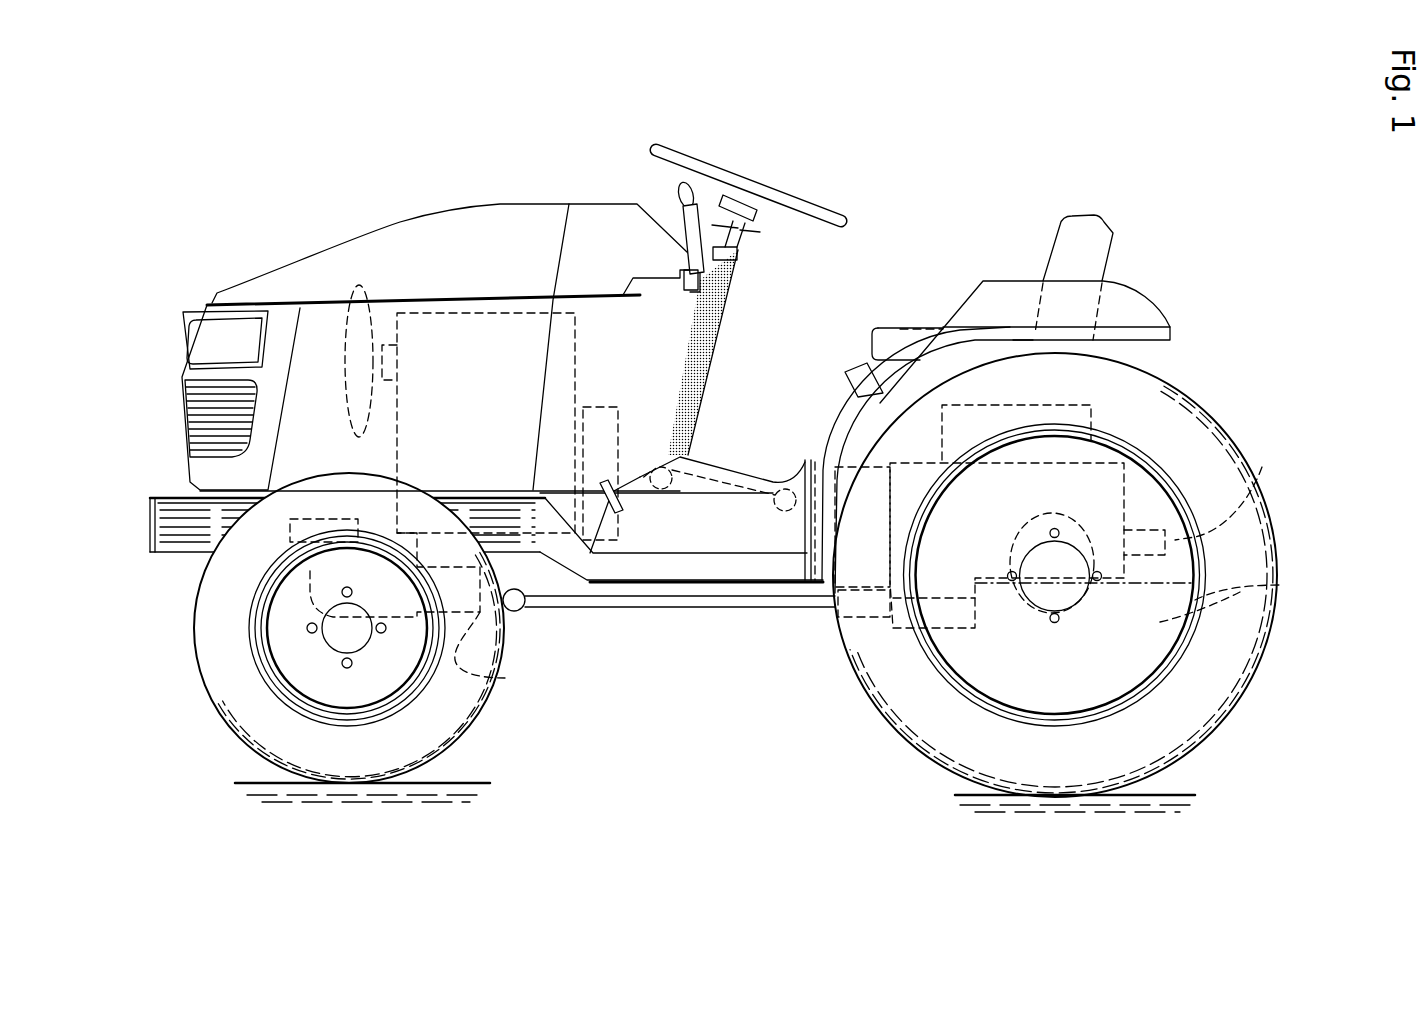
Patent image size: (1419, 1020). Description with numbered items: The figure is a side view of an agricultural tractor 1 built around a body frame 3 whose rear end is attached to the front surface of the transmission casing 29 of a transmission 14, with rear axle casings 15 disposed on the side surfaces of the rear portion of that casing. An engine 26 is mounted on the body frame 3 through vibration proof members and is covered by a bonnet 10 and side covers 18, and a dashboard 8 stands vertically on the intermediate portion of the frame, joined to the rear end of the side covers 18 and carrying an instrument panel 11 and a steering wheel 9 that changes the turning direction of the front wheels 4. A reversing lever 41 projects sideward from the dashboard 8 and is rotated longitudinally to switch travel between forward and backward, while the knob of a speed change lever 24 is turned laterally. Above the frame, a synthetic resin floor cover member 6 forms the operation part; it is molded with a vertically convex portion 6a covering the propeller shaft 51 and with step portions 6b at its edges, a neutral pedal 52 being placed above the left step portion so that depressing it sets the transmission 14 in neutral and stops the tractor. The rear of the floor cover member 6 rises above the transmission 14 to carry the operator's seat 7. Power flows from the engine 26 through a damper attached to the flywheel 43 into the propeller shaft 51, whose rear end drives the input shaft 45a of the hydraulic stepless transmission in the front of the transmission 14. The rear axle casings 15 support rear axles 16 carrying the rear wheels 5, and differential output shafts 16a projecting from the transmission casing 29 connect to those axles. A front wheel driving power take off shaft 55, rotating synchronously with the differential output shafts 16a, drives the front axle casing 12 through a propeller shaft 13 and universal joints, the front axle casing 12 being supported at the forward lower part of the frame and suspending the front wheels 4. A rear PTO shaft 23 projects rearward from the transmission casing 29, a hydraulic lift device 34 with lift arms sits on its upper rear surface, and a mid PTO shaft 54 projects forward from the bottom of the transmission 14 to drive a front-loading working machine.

The agricultural tractor 1 is at (565, 160).
The body frame 3 is at (165, 553).
The front wheels 4 is at (238, 742).
The rear wheels 5 is at (1220, 745).
The floor cover member 6 is at (745, 592).
The vertically convex portion 6a is at (725, 462).
The step portions 6b is at (688, 548).
The operator's seat 7 is at (1082, 216).
The dashboard 8 is at (742, 310).
The steering wheel 9 is at (755, 176).
The bonnet 10 is at (510, 213).
The instrument panel 11 is at (650, 207).
The front axle casing 12 is at (506, 680).
The propeller shaft 13 is at (567, 608).
The transmission 14 is at (945, 677).
The rear axle casings 15 is at (1195, 622).
The rear axles 16 is at (1070, 592).
The differential output shafts 16a is at (1033, 542).
The side covers 18 is at (313, 332).
The rear PTO shaft 23 is at (1262, 467).
The speed change lever 24 is at (858, 372).
The engine 26 is at (432, 280).
The transmission casing 29 is at (1282, 587).
The hydraulic lift device 34 is at (1125, 390).
The reversing lever 41 is at (690, 183).
The flywheel 43 is at (603, 405).
The input shaft 45a is at (810, 460).
The propeller shaft 51 is at (773, 470).
The neutral pedal 52 is at (615, 490).
The mid PTO shaft 54 is at (915, 657).
The front wheel driving power take off shaft 55 is at (858, 622).